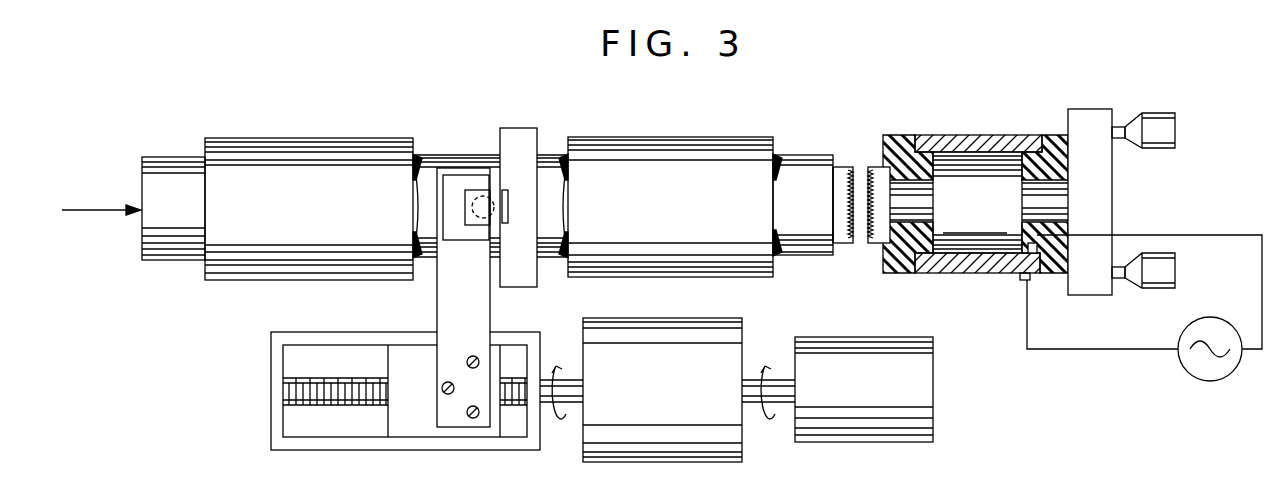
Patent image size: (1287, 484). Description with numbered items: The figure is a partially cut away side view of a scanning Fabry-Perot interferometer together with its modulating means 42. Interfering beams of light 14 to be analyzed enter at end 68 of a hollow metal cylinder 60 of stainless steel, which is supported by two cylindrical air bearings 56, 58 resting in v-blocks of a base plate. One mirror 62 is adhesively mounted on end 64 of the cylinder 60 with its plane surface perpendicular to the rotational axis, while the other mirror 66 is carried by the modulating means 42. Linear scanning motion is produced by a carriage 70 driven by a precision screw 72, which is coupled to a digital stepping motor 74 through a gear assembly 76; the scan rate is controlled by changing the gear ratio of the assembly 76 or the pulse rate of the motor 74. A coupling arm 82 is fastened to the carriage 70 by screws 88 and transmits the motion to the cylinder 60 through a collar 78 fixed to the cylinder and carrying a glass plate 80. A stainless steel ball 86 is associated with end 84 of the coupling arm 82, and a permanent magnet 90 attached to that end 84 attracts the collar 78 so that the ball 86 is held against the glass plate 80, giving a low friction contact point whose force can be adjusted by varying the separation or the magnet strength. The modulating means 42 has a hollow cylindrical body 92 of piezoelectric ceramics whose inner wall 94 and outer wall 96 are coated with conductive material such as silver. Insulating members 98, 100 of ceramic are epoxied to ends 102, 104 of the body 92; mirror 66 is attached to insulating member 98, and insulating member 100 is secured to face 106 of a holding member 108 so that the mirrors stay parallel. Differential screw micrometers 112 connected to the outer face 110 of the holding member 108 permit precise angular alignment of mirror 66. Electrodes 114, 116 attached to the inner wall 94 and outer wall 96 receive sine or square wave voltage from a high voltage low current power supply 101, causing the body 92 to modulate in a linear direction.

The light 14 is at (90, 210).
The modulating means 42 is at (955, 202).
The cylindrical air bearing 56 is at (645, 140).
The cylindrical air bearing 58 is at (315, 140).
The hollow metal cylinder 60 is at (795, 160).
The mirror 62 is at (845, 167).
The end of cylinder 64 is at (835, 167).
The mirror 66 is at (870, 243).
The end of cylinder 68 is at (142, 242).
The carriage 70 is at (400, 352).
The precision screw 72 is at (300, 385).
The digital stepping motor 74 is at (868, 400).
The gear assembly 76 is at (668, 402).
The collar 78 is at (512, 128).
The glass plate 80 is at (508, 213).
The coupling arm 82 is at (478, 305).
The end of coupling arm 84 is at (492, 205).
The ball 86 is at (498, 205).
The screws 88 is at (473, 356).
The permanent magnet 90 is at (463, 241).
The hollow cylindrical body 92 is at (945, 275).
The inner wall 94 is at (950, 253).
The outer wall 96 is at (967, 135).
The insulating member 98 is at (895, 135).
The insulating member 100 is at (1050, 135).
The power supply 101 is at (1205, 372).
The end of cylindrical body 102 is at (915, 135).
The end of cylindrical body 104 is at (1048, 135).
The face of holding member 106 is at (1068, 290).
The holding member 108 is at (1095, 197).
The outer face of holding member 110 is at (1112, 170).
The differential screw micrometers 112 is at (1160, 125).
The electrode 114 is at (1028, 245).
The electrode 116 is at (1020, 281).